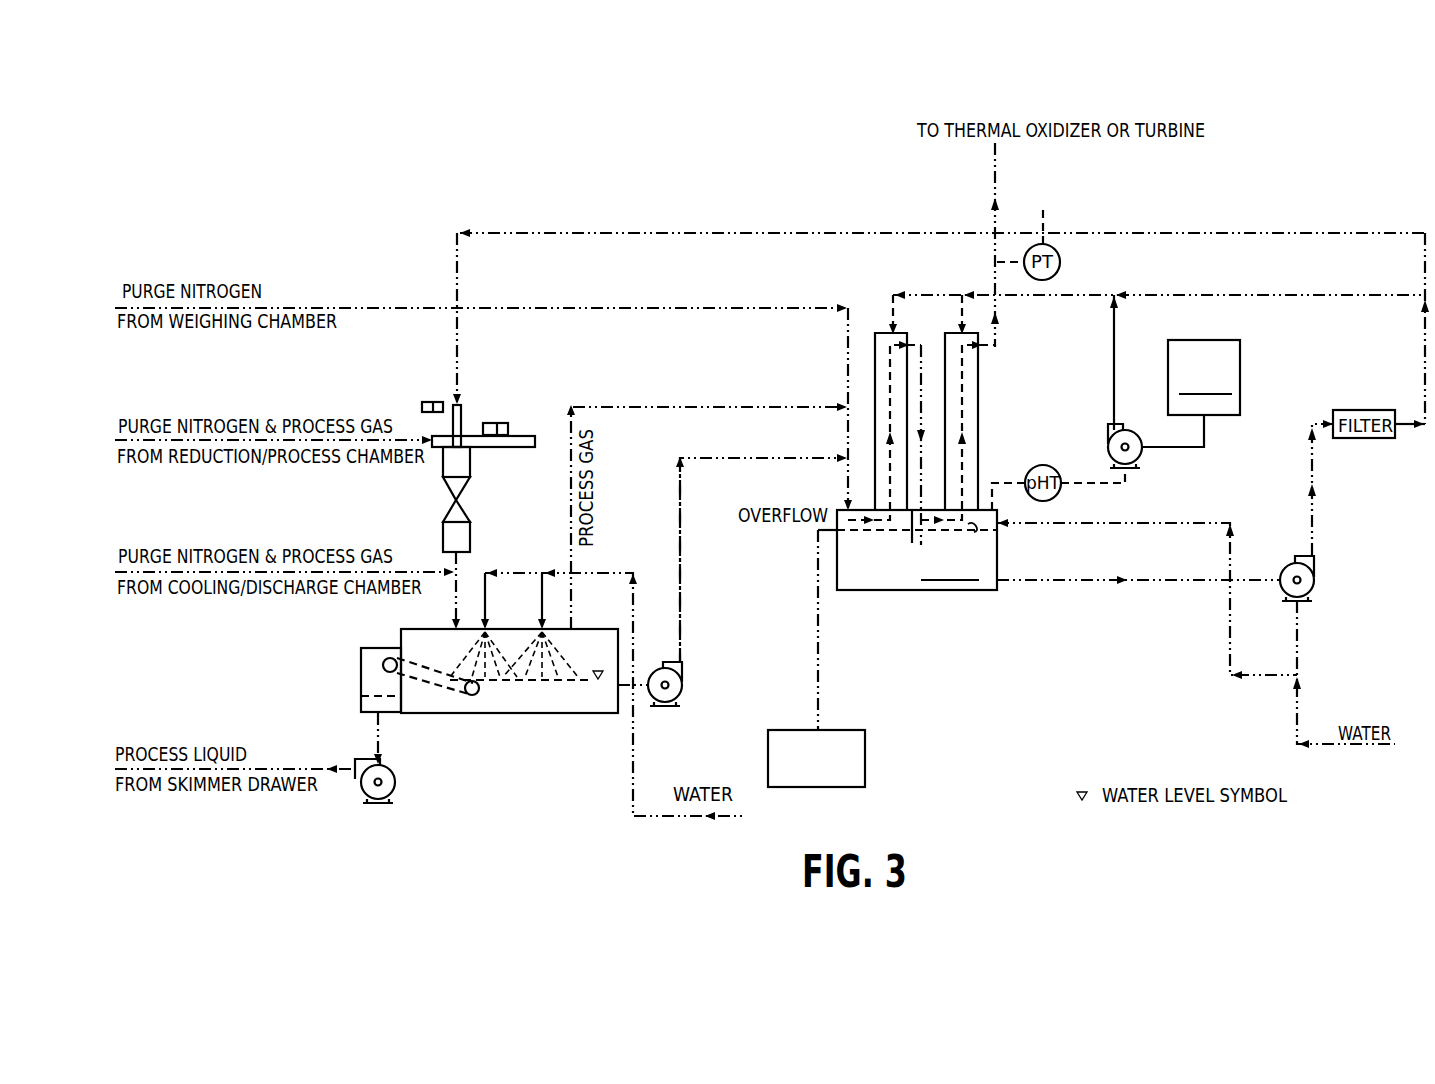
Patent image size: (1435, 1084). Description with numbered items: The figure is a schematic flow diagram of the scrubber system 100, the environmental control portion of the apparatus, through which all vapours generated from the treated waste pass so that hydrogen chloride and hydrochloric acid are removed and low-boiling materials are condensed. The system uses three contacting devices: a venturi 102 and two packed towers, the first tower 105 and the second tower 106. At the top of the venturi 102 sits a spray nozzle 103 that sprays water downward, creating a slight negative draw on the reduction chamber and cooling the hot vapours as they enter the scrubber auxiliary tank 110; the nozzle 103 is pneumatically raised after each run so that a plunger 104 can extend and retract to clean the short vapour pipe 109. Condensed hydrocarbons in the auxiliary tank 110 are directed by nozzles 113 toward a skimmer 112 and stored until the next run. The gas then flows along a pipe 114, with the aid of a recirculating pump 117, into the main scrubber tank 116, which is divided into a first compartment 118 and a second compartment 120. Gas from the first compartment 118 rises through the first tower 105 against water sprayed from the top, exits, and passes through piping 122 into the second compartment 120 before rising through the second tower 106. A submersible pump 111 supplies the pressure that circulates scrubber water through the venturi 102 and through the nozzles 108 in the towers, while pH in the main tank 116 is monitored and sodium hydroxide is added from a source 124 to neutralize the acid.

The scrubber system 100 is at (944, 748).
The venturi 102 is at (456, 498).
The spray nozzle 103 is at (466, 418).
The plunger 104 is at (471, 449).
The first packed tower 105 is at (872, 338).
The second packed tower 106 is at (942, 338).
The nozzles 108 is at (892, 331).
The vapour pipe 109 is at (432, 440).
The scrubber auxiliary tank 110 is at (447, 712).
The submersible pump 111 is at (1315, 585).
The skimmer 112 is at (476, 697).
The nozzles 113 is at (542, 620).
The pipe 114 is at (683, 644).
The main scrubber tank 116 is at (917, 550).
The recirculating pump 117 is at (683, 692).
The first compartment 118 is at (877, 522).
The second compartment 120 is at (975, 527).
The piping 122 is at (920, 487).
The NaOH source 124 is at (1174, 404).